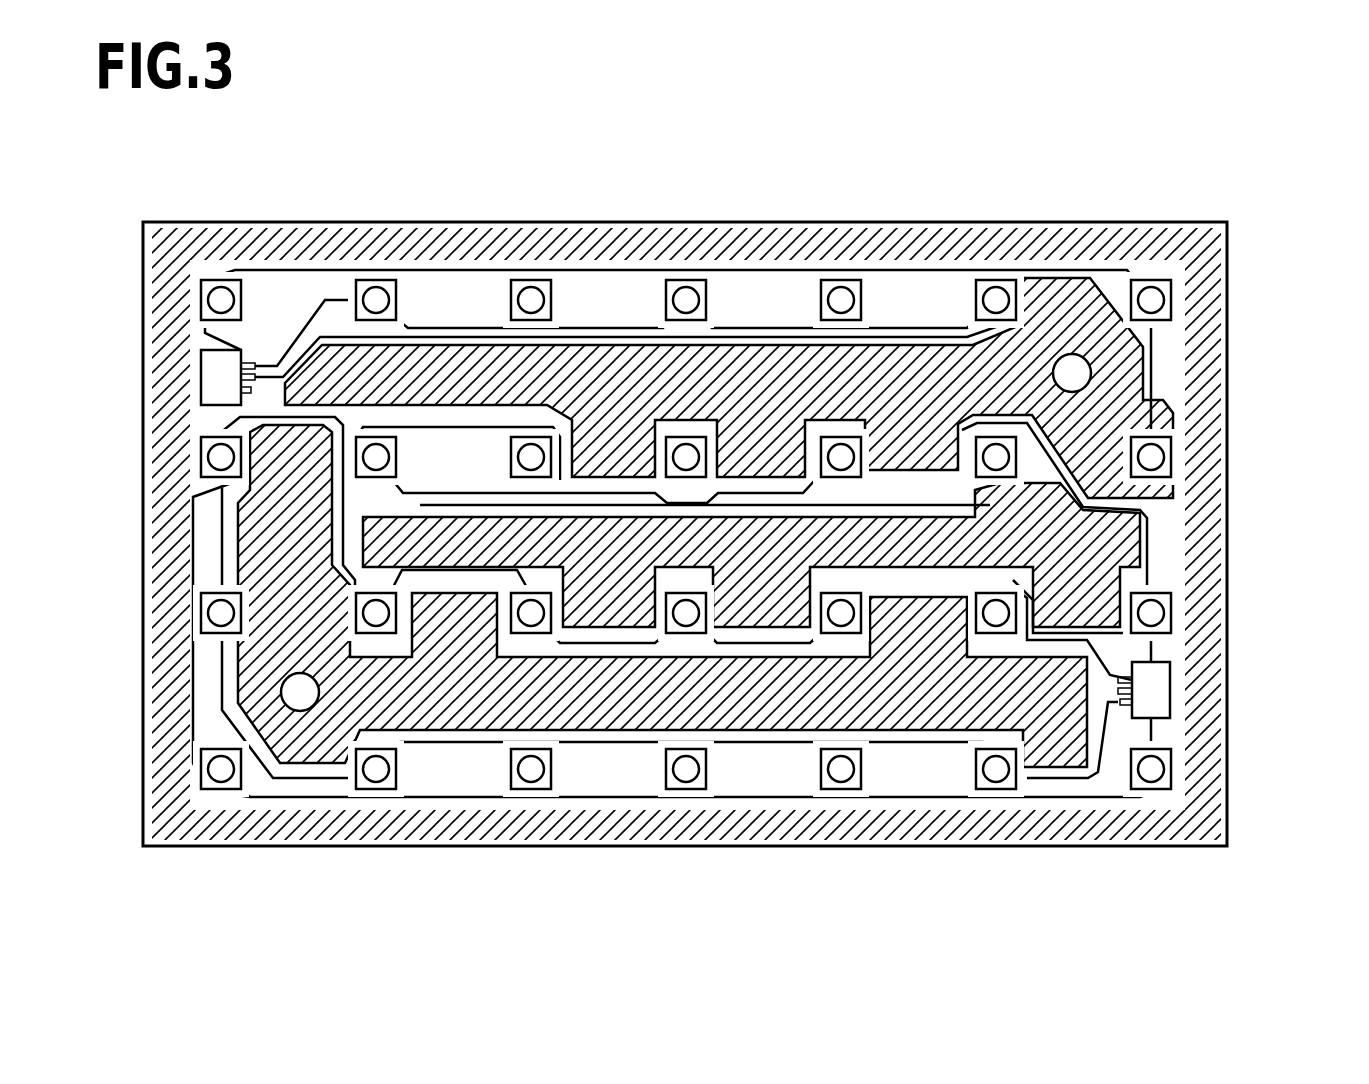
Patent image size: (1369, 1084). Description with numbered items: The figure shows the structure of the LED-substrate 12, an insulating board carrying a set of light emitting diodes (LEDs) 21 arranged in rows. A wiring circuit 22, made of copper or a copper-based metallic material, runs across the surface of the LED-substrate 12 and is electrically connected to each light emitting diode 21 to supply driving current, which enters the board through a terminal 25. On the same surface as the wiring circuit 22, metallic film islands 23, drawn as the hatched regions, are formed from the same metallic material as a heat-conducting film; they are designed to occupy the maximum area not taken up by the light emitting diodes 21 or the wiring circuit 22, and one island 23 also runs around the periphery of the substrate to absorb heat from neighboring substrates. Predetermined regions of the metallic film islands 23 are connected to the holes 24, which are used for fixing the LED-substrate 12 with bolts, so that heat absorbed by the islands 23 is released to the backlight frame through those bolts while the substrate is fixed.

The LED-substrate 12 is at (917, 222).
The light emitting diode (LED) 21 is at (400, 296).
The wiring circuit 22 is at (597, 268).
The metallic film island 23 is at (760, 360).
The hole 24 is at (1078, 372).
The terminal 25 is at (200, 380).